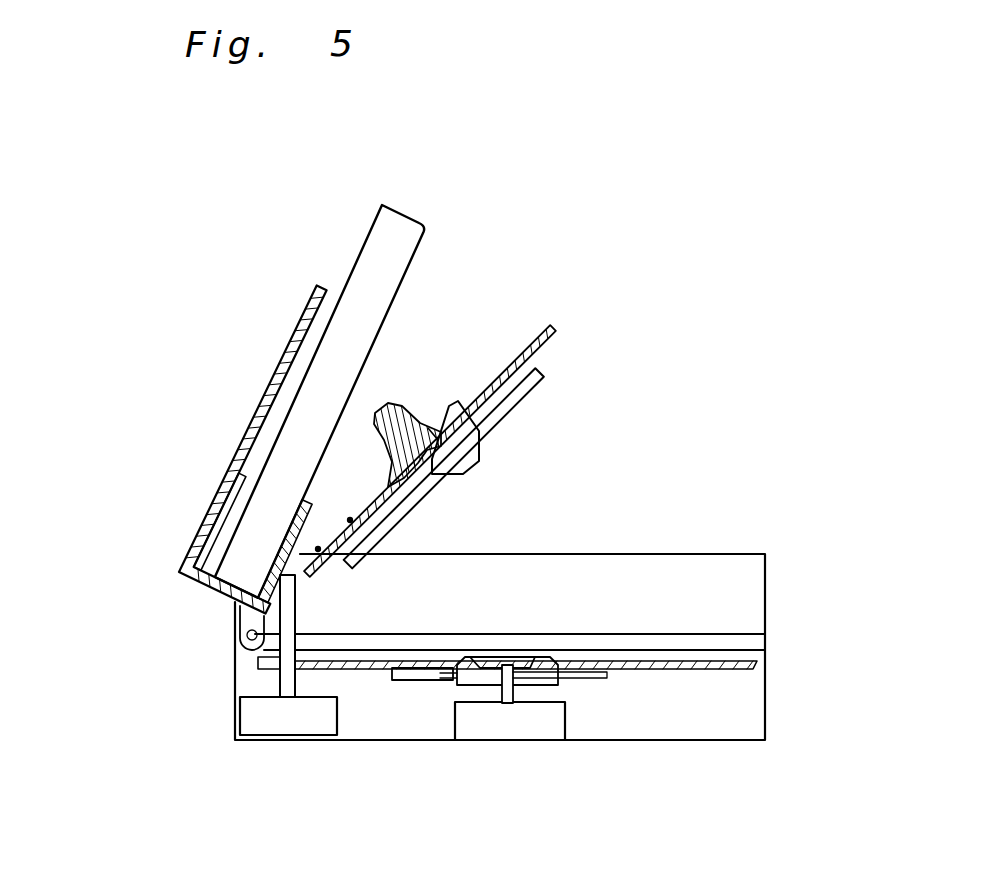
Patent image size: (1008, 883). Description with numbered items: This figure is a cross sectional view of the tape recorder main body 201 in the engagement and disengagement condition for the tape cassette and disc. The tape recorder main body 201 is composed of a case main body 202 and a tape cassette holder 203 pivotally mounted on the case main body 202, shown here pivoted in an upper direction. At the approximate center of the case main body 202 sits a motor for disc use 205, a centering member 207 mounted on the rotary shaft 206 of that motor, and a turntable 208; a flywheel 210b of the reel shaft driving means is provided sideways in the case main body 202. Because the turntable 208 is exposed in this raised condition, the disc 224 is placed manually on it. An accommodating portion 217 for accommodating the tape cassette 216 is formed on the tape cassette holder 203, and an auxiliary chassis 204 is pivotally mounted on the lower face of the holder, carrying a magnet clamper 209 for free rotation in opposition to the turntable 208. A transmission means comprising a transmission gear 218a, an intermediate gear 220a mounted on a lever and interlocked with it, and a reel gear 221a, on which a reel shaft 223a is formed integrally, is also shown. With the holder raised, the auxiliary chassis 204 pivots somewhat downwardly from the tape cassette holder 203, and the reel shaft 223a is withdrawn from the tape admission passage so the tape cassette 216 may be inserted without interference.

The tape recorder main body 201 is at (172, 619).
The case main body 202 is at (748, 727).
The tape cassette holder 203 is at (223, 483).
The auxiliary chassis 204 is at (563, 338).
The motor for disc use 205 is at (523, 725).
The rotary shaft 206 is at (507, 691).
The centering member 207 is at (545, 668).
The turntable 208 is at (420, 684).
The magnet clamper 209 is at (477, 447).
The flywheel 210b is at (297, 718).
The tape cassette 216 is at (389, 278).
The accommodating portion 217 is at (220, 537).
The transmission gear 218a is at (320, 561).
The intermediate gear 220a is at (330, 541).
The reel gear 221a is at (428, 428).
The reel shaft 223a is at (383, 437).
The disc 224 is at (762, 661).